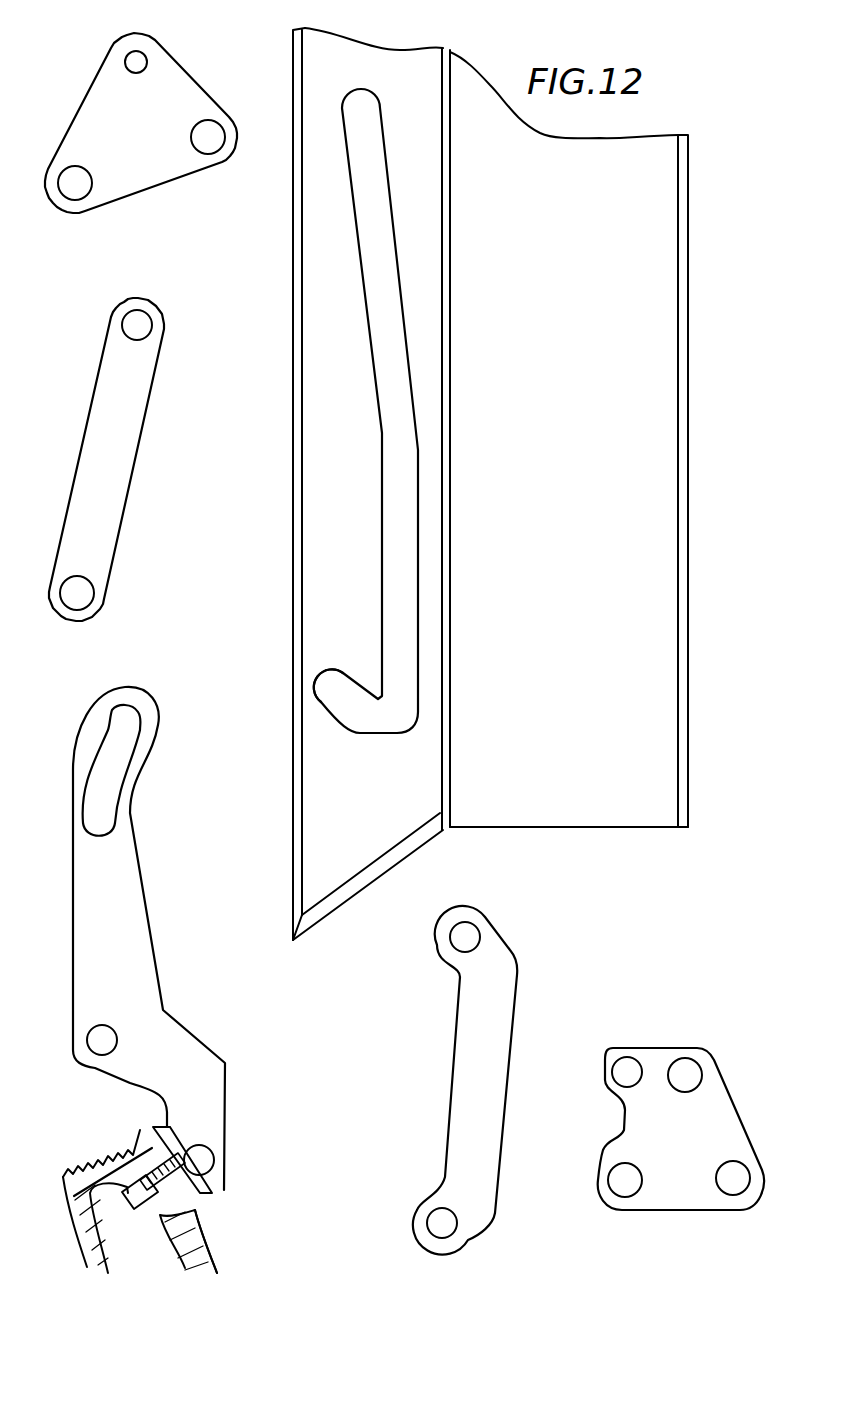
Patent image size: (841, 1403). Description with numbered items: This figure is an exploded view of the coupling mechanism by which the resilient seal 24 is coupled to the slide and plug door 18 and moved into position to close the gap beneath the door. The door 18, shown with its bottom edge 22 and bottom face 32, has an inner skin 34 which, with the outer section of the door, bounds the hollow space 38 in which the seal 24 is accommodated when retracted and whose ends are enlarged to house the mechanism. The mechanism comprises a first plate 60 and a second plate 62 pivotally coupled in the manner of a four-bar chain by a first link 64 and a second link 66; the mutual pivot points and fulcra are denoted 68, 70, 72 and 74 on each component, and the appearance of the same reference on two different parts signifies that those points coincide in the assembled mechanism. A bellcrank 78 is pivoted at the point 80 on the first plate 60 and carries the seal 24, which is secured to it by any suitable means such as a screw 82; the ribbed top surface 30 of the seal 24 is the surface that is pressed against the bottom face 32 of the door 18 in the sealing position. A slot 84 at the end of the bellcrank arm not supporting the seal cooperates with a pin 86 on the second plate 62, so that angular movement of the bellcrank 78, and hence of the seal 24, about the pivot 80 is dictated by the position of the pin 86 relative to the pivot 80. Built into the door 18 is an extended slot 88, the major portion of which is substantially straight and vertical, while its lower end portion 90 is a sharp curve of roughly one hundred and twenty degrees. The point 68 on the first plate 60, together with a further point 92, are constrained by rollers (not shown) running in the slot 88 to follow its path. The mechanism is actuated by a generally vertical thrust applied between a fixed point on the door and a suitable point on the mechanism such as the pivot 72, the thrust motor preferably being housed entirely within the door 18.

The slide and plug door 18 is at (291, 607).
The bottom edge 22 is at (295, 948).
The seal 24 is at (215, 1262).
The ribbed top surface 30 is at (102, 1155).
The bottom face 32 is at (385, 877).
The inner skin 34 is at (690, 636).
The hollow space 38 is at (580, 537).
The first plate 60 is at (645, 1195).
The second plate 62 is at (172, 165).
The first link 64 is at (128, 436).
The second link 66 is at (462, 1062).
The pivot point 68 is at (78, 596).
The pivot point 70 is at (141, 59).
The pivot point 72 is at (432, 1225).
The pivot point 74 is at (212, 133).
The bellcrank 78 is at (128, 903).
The pivot 80 is at (92, 1040).
The screw 82 is at (138, 1220).
The slot 84 is at (124, 736).
The pin 86 is at (70, 196).
The extended slot 88 is at (381, 488).
The lower end portion 90 is at (373, 733).
The further point 92 is at (684, 1068).